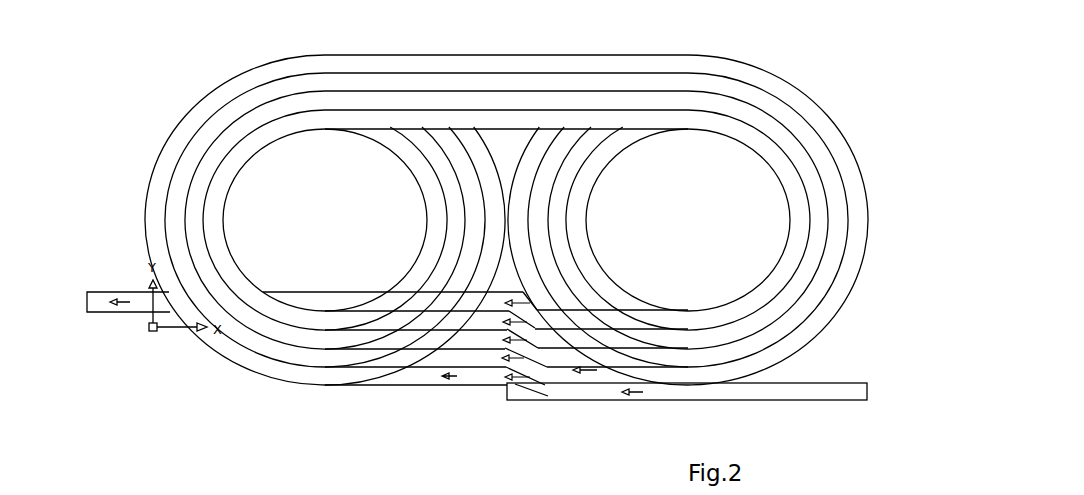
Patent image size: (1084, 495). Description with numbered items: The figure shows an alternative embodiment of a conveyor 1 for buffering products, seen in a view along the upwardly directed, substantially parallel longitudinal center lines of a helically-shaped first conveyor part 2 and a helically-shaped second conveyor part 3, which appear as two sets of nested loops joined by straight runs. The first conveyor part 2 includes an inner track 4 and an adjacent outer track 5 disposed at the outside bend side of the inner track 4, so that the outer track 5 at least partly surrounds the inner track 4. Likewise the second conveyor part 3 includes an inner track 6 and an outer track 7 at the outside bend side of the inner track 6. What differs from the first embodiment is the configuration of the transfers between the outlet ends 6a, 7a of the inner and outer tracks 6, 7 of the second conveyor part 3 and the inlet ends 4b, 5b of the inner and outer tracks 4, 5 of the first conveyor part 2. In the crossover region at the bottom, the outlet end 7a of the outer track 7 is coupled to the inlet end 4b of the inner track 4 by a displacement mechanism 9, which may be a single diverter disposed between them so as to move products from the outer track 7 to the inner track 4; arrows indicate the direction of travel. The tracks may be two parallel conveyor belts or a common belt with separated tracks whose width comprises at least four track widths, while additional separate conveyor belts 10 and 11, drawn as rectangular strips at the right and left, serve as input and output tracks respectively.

The conveyor 1 is at (235, 394).
The first conveyor part 2 is at (192, 340).
The second conveyor part 3 is at (773, 374).
The inner track 4 is at (247, 338).
The inlet end 4b is at (468, 357).
The outer track 5 is at (222, 345).
The inlet end 5b is at (492, 377).
The inner track 6 is at (727, 348).
The outlet end 6a is at (562, 355).
The outer track 7 is at (745, 360).
The outlet end 7a is at (555, 375).
The displacement mechanism 9 is at (537, 387).
The separate conveyor belt 10 is at (698, 388).
The separate conveyor belt 11 is at (102, 303).